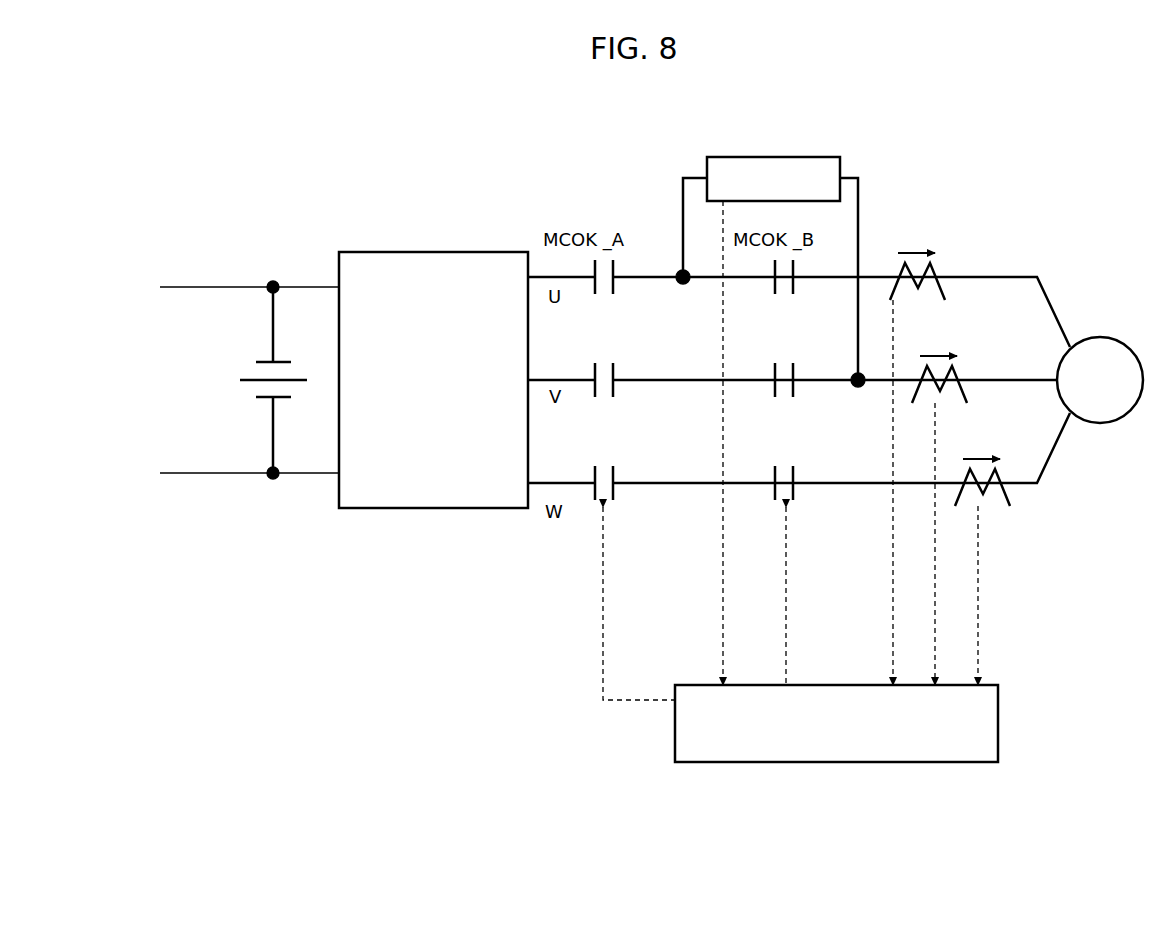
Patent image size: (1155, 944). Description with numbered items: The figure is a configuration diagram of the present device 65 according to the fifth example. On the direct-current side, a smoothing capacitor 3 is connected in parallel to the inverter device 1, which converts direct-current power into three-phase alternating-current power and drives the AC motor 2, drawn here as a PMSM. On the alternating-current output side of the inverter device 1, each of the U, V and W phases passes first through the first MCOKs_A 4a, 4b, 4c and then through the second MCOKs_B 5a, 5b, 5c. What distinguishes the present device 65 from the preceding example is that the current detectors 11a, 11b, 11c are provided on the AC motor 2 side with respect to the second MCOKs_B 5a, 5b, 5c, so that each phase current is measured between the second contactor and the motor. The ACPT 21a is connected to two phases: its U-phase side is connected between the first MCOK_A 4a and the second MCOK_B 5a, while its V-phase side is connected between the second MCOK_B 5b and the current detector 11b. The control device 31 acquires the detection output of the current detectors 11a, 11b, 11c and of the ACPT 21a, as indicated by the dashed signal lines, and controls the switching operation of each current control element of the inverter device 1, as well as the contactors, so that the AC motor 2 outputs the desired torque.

The present device 65 is at (446, 150).
The inverter device 1 is at (441, 391).
The AC motor 2 is at (1100, 380).
The smoothing capacitor 3 is at (236, 378).
The first MCOK_A 4a is at (617, 296).
The first MCOK_A 4b is at (617, 399).
The first MCOK_A 4c is at (617, 502).
The second MCOK_B 5a is at (797, 296).
The second MCOK_B 5b is at (797, 399).
The second MCOK_B 5c is at (797, 502).
The current detector 11a is at (941, 267).
The current detector 11b is at (966, 380).
The current detector 11c is at (1006, 468).
The ACPT 21a is at (822, 190).
The control device 31 is at (850, 736).